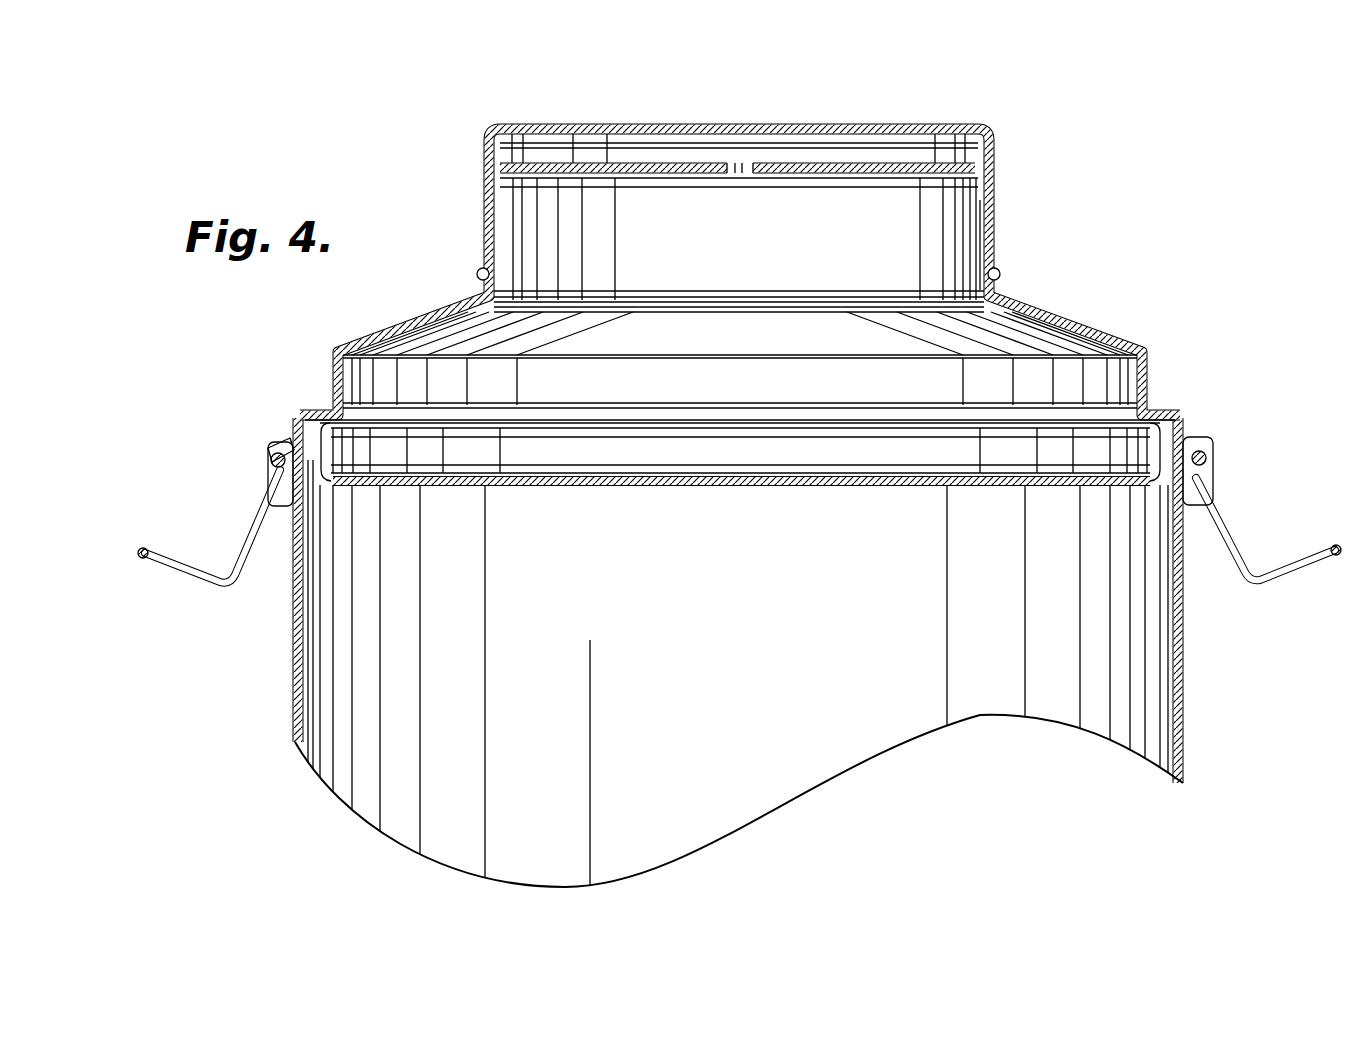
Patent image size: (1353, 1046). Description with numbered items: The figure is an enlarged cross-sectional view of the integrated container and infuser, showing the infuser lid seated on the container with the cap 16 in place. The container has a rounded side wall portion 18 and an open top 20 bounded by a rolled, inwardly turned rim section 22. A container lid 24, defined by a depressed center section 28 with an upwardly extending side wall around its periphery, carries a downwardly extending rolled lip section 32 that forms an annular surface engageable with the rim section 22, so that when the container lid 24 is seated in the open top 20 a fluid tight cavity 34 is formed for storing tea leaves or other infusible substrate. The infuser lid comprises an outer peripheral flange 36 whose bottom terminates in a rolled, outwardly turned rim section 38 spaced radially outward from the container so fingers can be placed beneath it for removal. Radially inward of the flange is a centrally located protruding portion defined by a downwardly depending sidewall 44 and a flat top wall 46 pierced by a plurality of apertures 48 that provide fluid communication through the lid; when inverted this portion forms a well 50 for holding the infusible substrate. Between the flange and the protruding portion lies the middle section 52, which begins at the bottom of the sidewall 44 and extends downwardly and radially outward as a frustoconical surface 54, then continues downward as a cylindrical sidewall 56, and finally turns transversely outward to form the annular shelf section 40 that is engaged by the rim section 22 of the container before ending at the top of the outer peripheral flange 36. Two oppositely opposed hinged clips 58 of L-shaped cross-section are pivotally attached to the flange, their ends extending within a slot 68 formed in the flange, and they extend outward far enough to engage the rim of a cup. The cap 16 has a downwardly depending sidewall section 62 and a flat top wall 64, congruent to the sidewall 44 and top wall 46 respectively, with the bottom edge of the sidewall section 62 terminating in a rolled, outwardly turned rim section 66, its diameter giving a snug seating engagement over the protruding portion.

The cap 16 is at (1000, 121).
The side wall portion 18 is at (1185, 742).
The open top 20 is at (390, 692).
The rim section 22 is at (1173, 492).
The container lid 24 is at (655, 494).
The depressed center section 28 is at (752, 490).
The lip section 32 is at (1182, 425).
The fluid tight cavity 34 is at (757, 742).
The outer peripheral flange 36 is at (256, 443).
The rim section 38 is at (286, 508).
The shelf section 40 is at (1162, 415).
The sidewall 44 is at (988, 245).
The top wall 46 is at (810, 163).
The apertures 48 is at (745, 174).
The well 50 is at (583, 257).
The middle section 52 is at (1151, 362).
The frustoconical surface 54 is at (1075, 325).
The cylindrical sidewall 56 is at (1150, 380).
The hinged clips 58 is at (1296, 540).
The sidewall section 62 is at (996, 200).
The top wall 64 is at (640, 125).
The rim section 66 is at (1003, 268).
The slot 68 is at (283, 437).